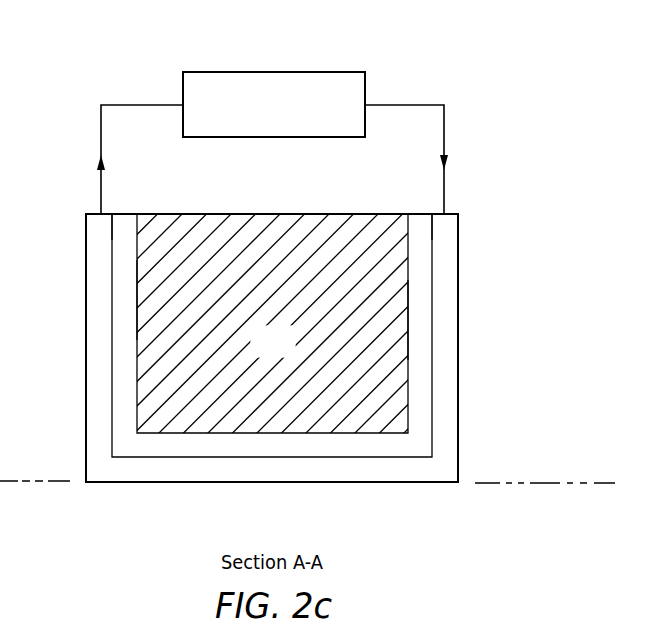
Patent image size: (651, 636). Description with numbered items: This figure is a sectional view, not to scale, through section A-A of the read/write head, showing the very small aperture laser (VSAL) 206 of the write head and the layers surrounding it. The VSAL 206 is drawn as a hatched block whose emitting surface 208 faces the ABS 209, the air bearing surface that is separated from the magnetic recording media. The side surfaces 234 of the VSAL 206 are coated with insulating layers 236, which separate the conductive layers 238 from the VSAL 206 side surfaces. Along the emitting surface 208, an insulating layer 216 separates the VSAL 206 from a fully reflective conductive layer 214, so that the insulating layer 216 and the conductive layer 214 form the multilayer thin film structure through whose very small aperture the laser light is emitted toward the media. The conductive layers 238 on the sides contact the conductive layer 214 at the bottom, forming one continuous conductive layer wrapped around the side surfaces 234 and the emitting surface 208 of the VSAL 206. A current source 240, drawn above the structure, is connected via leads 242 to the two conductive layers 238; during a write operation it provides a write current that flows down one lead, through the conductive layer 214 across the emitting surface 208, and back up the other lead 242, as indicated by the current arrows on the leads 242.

The very small aperture laser (VSAL) 206 is at (289, 352).
The emitting surface 208 is at (287, 436).
The ABS 209 is at (547, 485).
The conductive layer 214 is at (418, 476).
The insulating layer 216 is at (350, 446).
The side surfaces 234 is at (137, 297).
The insulating layers 236 is at (123, 213).
The conductive layers 238 is at (88, 259).
The current source 240 is at (351, 72).
The leads 242 is at (101, 118).